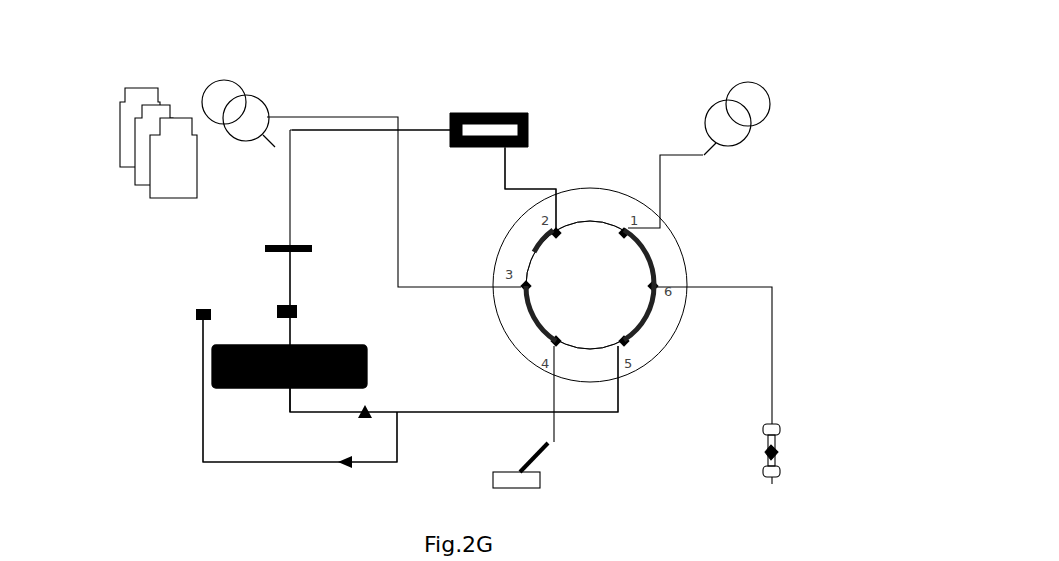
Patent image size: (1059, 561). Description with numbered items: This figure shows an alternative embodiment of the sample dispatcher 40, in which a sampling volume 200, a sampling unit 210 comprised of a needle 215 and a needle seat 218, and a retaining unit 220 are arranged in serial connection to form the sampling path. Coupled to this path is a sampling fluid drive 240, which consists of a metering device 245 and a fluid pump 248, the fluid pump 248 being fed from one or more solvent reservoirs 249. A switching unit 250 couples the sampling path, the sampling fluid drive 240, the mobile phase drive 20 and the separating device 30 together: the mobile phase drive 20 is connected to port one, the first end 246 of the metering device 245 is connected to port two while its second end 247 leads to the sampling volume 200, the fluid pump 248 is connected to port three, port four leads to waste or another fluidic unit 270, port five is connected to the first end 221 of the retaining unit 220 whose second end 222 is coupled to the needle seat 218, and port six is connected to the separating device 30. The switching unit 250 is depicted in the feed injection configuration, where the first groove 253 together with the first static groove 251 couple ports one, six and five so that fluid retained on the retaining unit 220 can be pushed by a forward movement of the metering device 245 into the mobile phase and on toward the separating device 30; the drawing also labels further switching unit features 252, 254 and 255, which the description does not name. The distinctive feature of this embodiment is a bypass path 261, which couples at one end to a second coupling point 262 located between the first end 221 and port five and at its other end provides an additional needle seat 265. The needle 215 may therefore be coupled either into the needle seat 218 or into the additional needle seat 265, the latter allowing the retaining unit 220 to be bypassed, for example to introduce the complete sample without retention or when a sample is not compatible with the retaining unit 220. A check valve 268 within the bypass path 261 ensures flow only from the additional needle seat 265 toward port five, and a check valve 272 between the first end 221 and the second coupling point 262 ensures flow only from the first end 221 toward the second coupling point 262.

The mobile phase drive 20 is at (764, 97).
The separating device 30 is at (775, 452).
The sample dispatcher 40 is at (589, 103).
The sampling volume 200 is at (305, 247).
The sampling unit 210 is at (269, 267).
The needle 215 is at (290, 290).
The needle seat 218 is at (298, 313).
The retaining unit 220 is at (233, 378).
The first end of the retaining unit 221 is at (290, 395).
The second end of the retaining unit 222 is at (290, 340).
The sampling fluid drive 240 is at (397, 91).
The metering device 245 is at (490, 125).
The first end of the metering device 246 is at (505, 147).
The second end of the metering device 247 is at (447, 128).
The fluid pump 248 is at (224, 85).
The solvent reservoirs 249 is at (145, 177).
The switching unit 250 is at (600, 187).
The first static groove 251 is at (636, 243).
The valve channel 252 is at (537, 245).
The first groove 253 is at (645, 318).
The valve rotor 254 is at (583, 223).
The valve channel 255 is at (527, 310).
The bypass path 261 is at (232, 462).
The second coupling point 262 is at (400, 412).
The additional needle seat 265 is at (200, 317).
The check valve 268 is at (350, 465).
The waste or other fluidic unit 270 is at (528, 480).
The check valve 272 is at (366, 410).